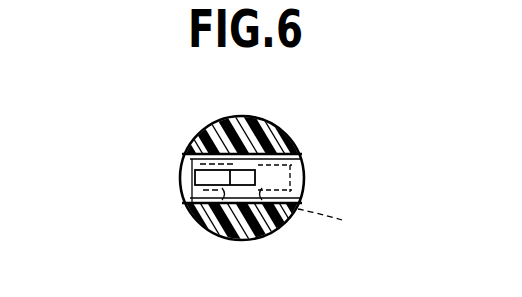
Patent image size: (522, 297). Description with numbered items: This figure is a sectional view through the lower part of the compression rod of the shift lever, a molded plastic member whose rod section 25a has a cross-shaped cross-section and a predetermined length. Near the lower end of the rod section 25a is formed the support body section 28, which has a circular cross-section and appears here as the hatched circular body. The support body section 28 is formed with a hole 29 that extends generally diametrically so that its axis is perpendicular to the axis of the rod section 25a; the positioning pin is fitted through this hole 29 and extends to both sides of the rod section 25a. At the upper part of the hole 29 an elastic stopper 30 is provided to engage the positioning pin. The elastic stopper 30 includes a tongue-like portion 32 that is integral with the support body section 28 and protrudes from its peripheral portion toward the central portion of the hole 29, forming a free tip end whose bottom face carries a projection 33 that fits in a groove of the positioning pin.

The support body section 28 is at (276, 121).
The hole 29 is at (182, 161).
The elastic stopper 30 is at (184, 182).
The tongue-like portion 32 is at (210, 182).
The projection 33 is at (278, 181).
The rod section 25a is at (350, 217).